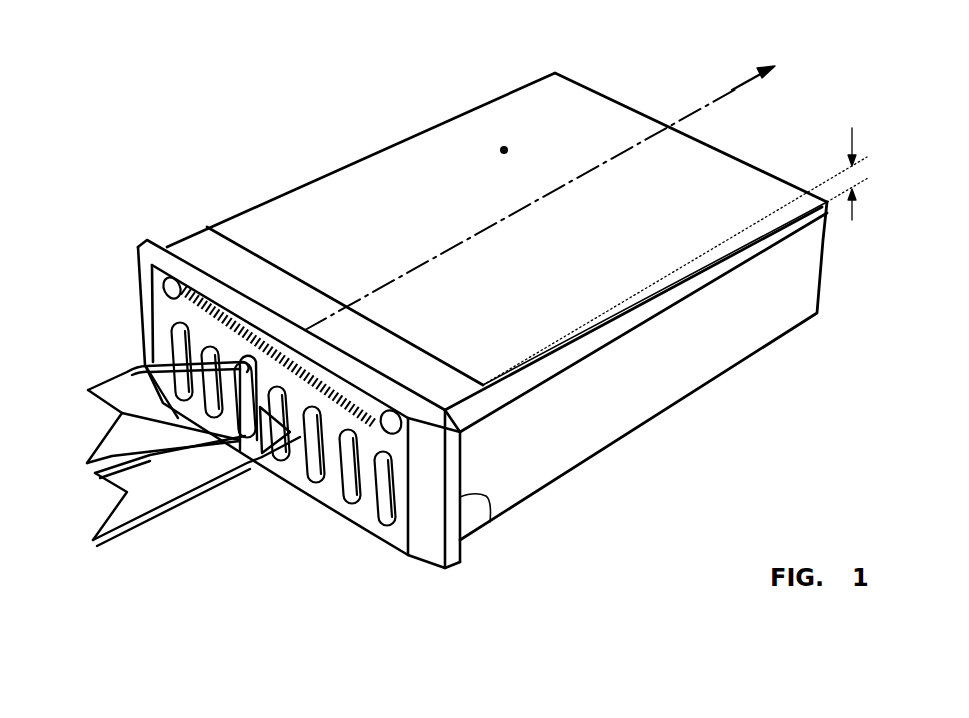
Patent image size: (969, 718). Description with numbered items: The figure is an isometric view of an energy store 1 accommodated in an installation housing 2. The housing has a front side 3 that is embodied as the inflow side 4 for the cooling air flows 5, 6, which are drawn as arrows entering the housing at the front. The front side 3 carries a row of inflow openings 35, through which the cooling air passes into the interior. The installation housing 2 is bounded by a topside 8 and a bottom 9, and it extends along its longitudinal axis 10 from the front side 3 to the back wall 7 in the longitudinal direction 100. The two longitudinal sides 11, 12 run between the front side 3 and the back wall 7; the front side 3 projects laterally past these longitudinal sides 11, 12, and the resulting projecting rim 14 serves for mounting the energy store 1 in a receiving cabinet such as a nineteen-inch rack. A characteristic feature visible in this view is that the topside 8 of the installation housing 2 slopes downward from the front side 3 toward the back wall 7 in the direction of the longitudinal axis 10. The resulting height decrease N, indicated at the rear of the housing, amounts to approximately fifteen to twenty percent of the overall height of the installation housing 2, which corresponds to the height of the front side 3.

The energy store 1 is at (192, 188).
The installation housing 2 is at (793, 323).
The front side 3 is at (358, 517).
The inflow side 4 is at (112, 327).
The cooling air flow 5 is at (142, 478).
The cooling air flow 6 is at (120, 397).
The back wall 7 is at (825, 271).
The topside 8 is at (503, 147).
The bottom 9 is at (672, 405).
The longitudinal axis 10 is at (693, 108).
The longitudinal side 11 is at (523, 455).
The longitudinal side 12 is at (432, 125).
The projecting rim 14 is at (490, 522).
The inflow openings 35 is at (352, 460).
The longitudinal direction 100 is at (748, 84).
The height decrease N is at (681, 253).